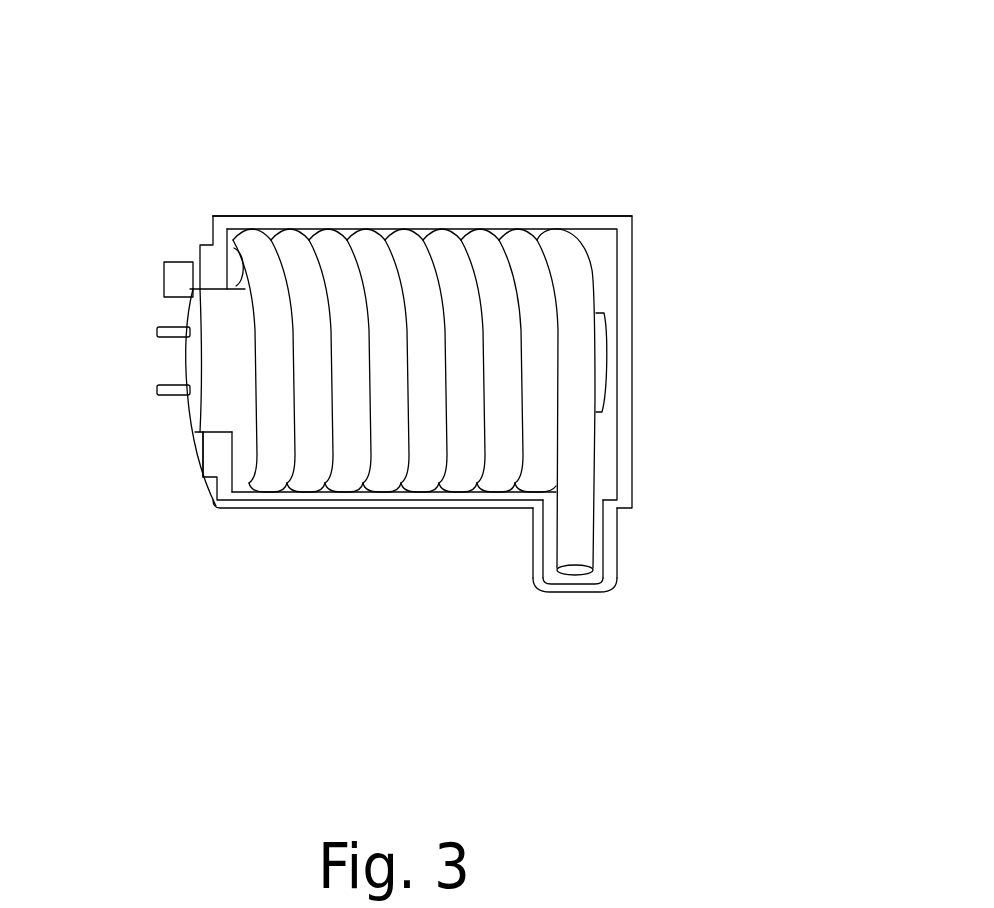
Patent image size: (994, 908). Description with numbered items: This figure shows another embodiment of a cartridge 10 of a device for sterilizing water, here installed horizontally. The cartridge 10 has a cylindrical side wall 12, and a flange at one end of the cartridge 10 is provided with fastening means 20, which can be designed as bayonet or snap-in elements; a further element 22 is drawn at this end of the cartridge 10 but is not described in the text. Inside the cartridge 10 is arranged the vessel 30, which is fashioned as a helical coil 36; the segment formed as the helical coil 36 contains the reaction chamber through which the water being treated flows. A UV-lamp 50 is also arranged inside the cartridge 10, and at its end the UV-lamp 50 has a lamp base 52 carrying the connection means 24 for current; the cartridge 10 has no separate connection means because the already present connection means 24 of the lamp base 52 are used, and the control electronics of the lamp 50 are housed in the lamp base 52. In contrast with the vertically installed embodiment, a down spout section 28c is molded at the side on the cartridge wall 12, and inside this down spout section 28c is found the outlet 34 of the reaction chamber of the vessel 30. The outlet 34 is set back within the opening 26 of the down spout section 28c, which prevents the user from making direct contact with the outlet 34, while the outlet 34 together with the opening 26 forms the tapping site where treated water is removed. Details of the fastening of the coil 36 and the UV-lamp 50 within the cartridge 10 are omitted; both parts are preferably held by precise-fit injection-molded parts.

The cartridge 10 is at (557, 168).
The cartridge wall 12 is at (372, 506).
The fastening means 20 is at (215, 458).
The terminal 22 is at (163, 278).
The connection means 24 is at (172, 388).
The opening 26 is at (596, 598).
The down spout section 28c is at (540, 542).
The vessel 30 is at (423, 226).
The outlet 34 is at (580, 525).
The helical coil 36 is at (372, 238).
The UV-lamp 50 is at (602, 345).
The lamp base 52 is at (230, 407).